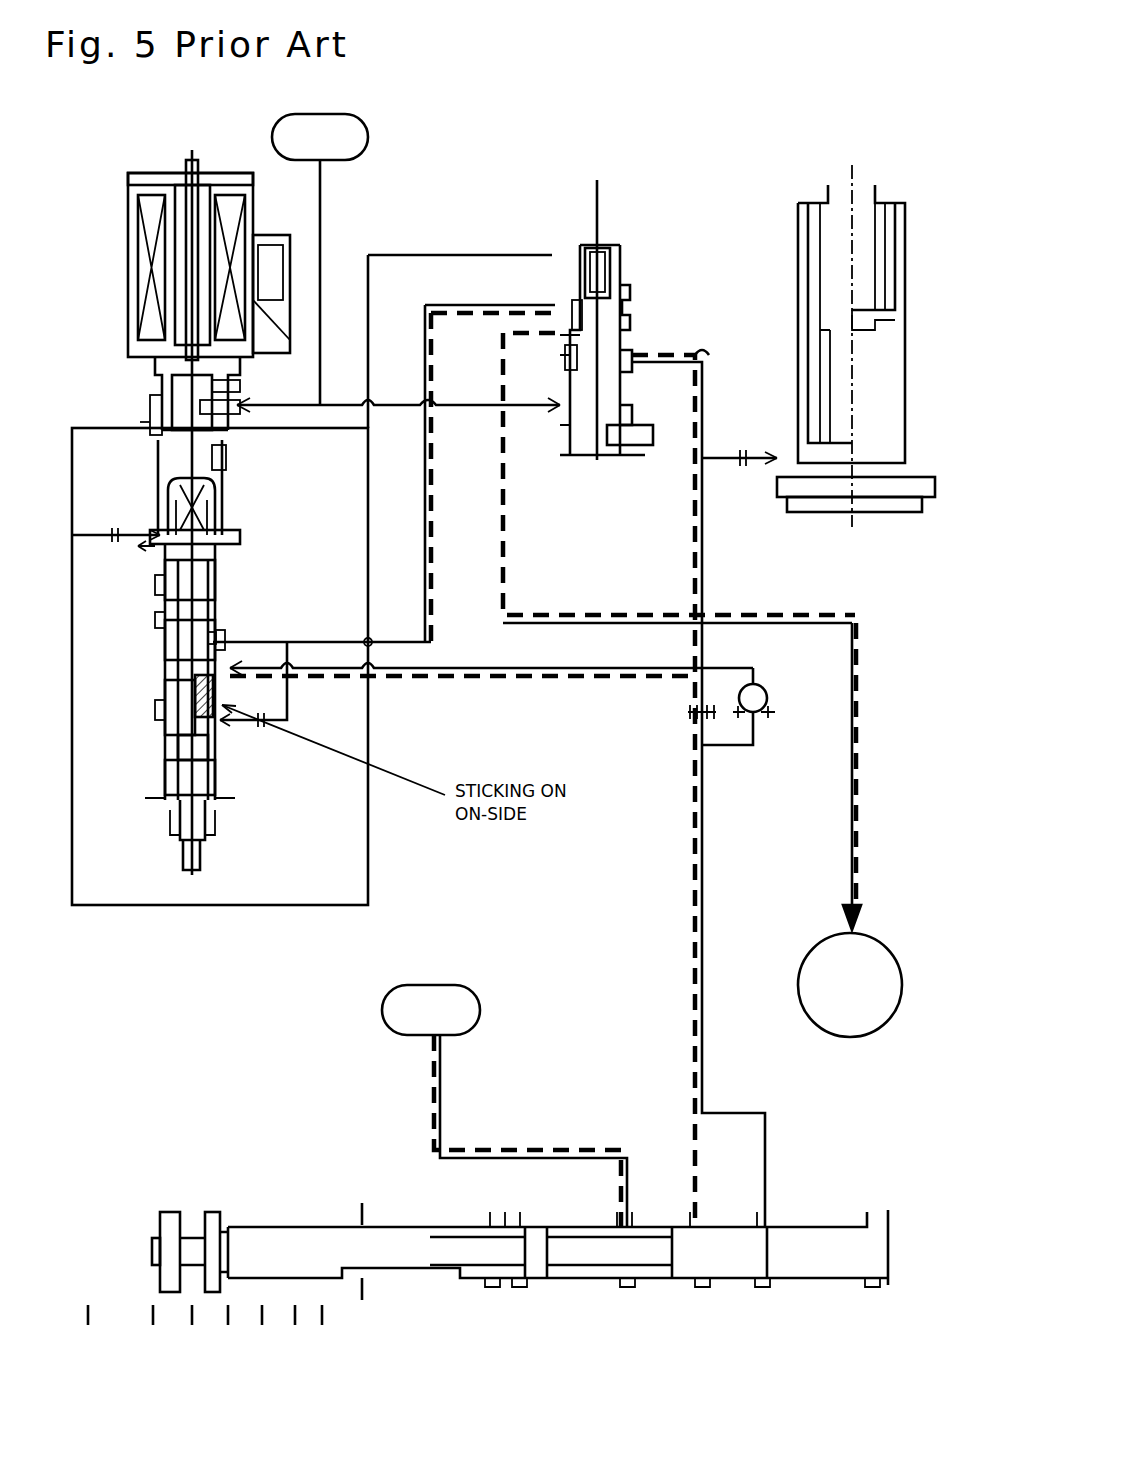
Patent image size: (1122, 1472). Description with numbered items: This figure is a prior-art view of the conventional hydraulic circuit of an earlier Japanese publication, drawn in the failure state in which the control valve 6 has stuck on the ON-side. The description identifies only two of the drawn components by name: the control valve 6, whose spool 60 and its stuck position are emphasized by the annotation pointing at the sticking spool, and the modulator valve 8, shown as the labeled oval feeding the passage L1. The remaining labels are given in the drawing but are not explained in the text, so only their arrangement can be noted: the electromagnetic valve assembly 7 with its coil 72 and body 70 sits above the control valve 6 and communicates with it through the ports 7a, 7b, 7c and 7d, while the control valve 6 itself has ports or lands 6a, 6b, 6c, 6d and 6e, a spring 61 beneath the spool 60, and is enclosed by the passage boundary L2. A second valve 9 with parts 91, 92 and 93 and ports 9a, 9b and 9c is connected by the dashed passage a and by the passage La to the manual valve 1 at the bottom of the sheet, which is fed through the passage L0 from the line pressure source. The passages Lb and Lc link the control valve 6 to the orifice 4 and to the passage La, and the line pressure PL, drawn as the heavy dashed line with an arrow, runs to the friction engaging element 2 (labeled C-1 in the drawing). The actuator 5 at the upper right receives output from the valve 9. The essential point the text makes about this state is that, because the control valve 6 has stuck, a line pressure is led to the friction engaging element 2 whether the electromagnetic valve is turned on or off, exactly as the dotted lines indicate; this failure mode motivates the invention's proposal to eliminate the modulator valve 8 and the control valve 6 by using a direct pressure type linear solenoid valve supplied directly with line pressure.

The manual valve 1 is at (314, 1191).
The clutch C-1 2 is at (857, 1040).
The orifice 4 is at (744, 762).
The hydraulic servo cylinder 5 is at (851, 160).
The control valve 6 is at (158, 652).
The port 6a is at (230, 645).
The spool land 6b is at (218, 620).
The port 6c is at (230, 722).
The port 6d is at (160, 618).
The spring chamber 6e is at (240, 537).
The solenoid valve 7 is at (128, 355).
The port 7a is at (236, 415).
The drain port 7b is at (152, 422).
The port 7c is at (228, 376).
The valve seat 7d is at (222, 455).
The modulator valve 8 is at (372, 132).
The switching valve 9 is at (603, 228).
The port 9a is at (630, 360).
The port 9b is at (560, 300).
The port 9c is at (570, 345).
The spool 60 is at (165, 682).
The spring 61 is at (172, 742).
The valve body 70 is at (178, 452).
The solenoid coil 72 is at (140, 280).
The spool land 91 is at (628, 386).
The spring 92 is at (630, 302).
The plug 93 is at (628, 262).
The oil passage a is at (700, 517).
The line pressure passage L0 is at (428, 1098).
The solenoid modulator pressure passage L1 is at (326, 232).
The control pressure passage L2 is at (275, 906).
The oil passage La is at (706, 830).
The oil passage Lb is at (470, 670).
The oil passage Lc is at (346, 640).
The line pressure PL is at (858, 712).